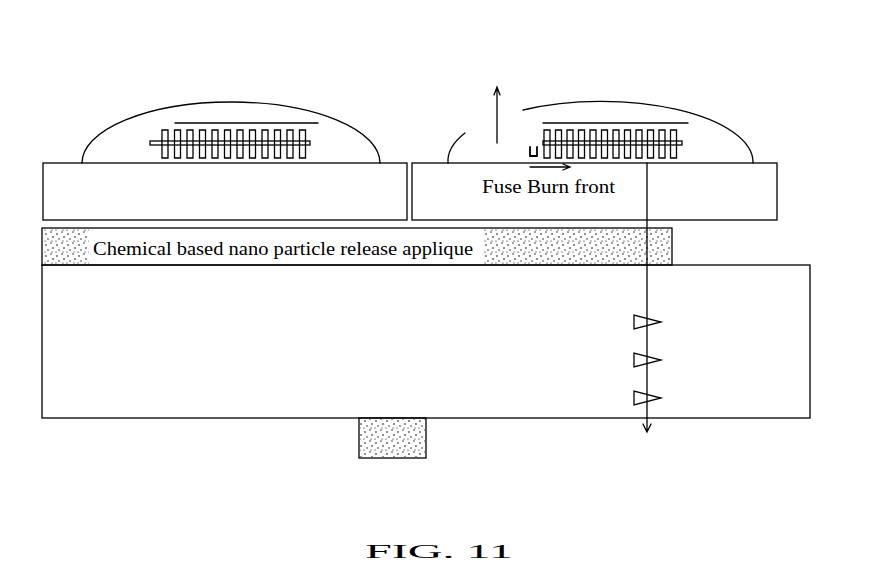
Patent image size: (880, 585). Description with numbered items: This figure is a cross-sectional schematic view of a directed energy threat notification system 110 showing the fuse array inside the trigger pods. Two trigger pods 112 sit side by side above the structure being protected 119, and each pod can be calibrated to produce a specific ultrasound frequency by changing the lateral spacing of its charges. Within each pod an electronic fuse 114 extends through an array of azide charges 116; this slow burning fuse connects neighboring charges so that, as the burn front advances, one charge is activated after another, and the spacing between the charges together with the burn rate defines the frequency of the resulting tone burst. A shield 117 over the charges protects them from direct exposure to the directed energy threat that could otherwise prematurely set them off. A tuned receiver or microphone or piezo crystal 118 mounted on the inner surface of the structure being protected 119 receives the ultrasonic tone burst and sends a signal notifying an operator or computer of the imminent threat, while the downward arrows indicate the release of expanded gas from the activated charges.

The directed energy threat notification system 110 is at (435, 92).
The trigger pod 112 is at (117, 137).
The electronic fuse 114 is at (151, 140).
The array of azide charges 116 is at (202, 130).
The shield 117 is at (258, 122).
The tuned receiver or microphone or piezo crystal 118 is at (408, 440).
The structure being protected 119 is at (718, 400).